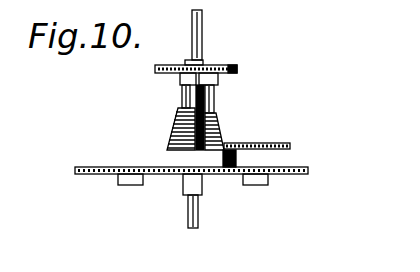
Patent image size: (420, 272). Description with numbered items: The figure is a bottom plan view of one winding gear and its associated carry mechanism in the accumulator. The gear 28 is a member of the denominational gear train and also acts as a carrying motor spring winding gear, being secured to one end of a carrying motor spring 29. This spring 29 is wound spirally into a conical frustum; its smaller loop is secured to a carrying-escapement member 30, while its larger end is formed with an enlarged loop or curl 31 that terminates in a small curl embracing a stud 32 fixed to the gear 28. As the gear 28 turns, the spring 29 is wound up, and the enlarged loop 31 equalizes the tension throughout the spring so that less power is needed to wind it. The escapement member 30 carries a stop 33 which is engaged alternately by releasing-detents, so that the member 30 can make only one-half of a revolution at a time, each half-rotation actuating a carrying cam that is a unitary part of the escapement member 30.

The gear 28 is at (105, 174).
The carrying motor spring 29 is at (172, 128).
The carrying-escapement member 30 is at (242, 67).
The enlarged loop 31 is at (255, 166).
The stud 32 is at (233, 172).
The stop 33 is at (214, 98).